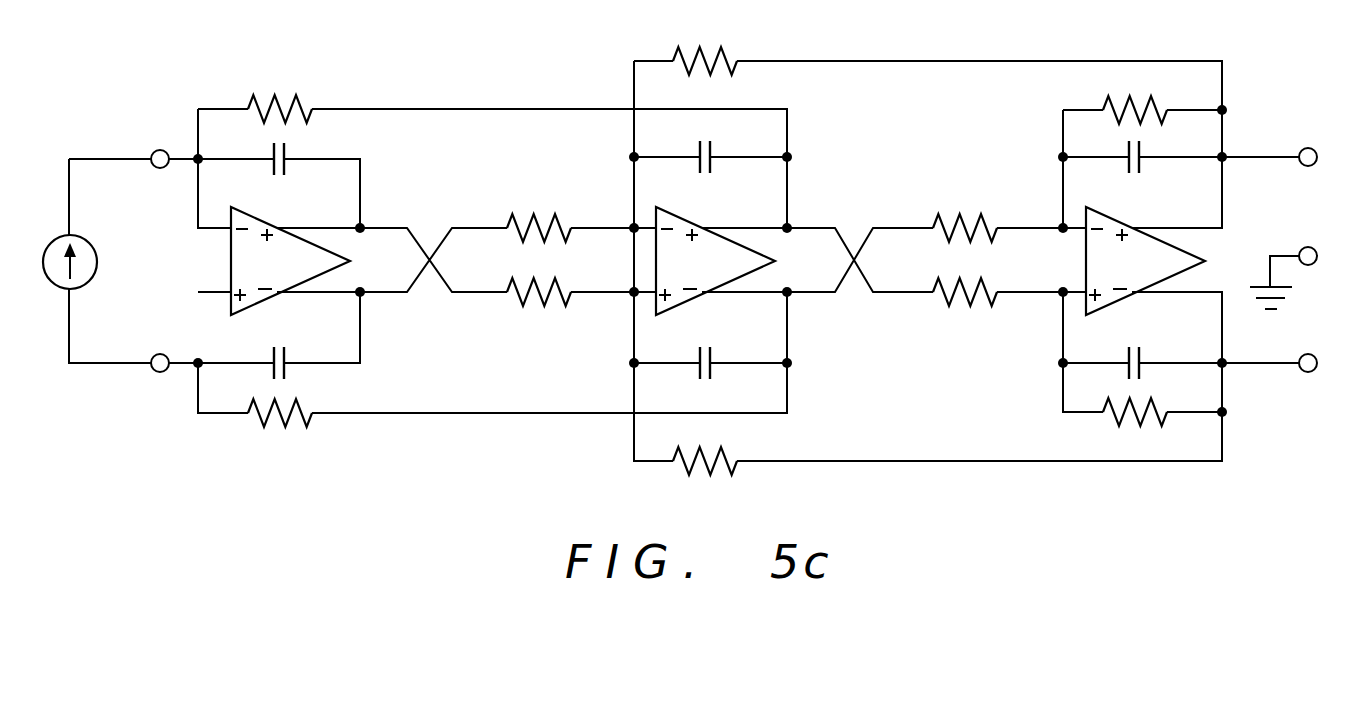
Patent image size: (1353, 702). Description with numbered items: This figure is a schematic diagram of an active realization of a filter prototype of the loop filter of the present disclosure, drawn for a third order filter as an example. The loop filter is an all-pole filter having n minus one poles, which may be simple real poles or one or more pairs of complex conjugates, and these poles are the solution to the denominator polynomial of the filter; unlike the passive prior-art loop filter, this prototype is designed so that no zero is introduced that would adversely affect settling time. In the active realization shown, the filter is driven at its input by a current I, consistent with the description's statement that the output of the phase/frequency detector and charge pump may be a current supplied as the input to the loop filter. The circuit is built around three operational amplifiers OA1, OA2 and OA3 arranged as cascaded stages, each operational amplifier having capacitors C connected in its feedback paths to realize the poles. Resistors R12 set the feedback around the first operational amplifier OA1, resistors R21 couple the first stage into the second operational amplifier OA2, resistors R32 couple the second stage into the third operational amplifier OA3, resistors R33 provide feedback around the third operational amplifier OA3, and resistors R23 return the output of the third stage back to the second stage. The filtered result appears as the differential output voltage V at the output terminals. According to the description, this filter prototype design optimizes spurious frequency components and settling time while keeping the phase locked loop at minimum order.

The input current source I is at (61, 262).
The first operational amplifier OA1 is at (290, 261).
The second operational amplifier OA2 is at (715, 261).
The third operational amplifier OA3 is at (1145, 261).
The feedback resistor of first stage R12 is at (299, 275).
The input resistor of second stage R21 is at (557, 277).
The feedback resistor from third stage to second stage R23 is at (727, 274).
The input resistor of third stage R32 is at (984, 278).
The feedback resistor of third stage R33 is at (1154, 276).
The integrating capacitor C is at (719, 260).
The differential output voltage V is at (1344, 318).